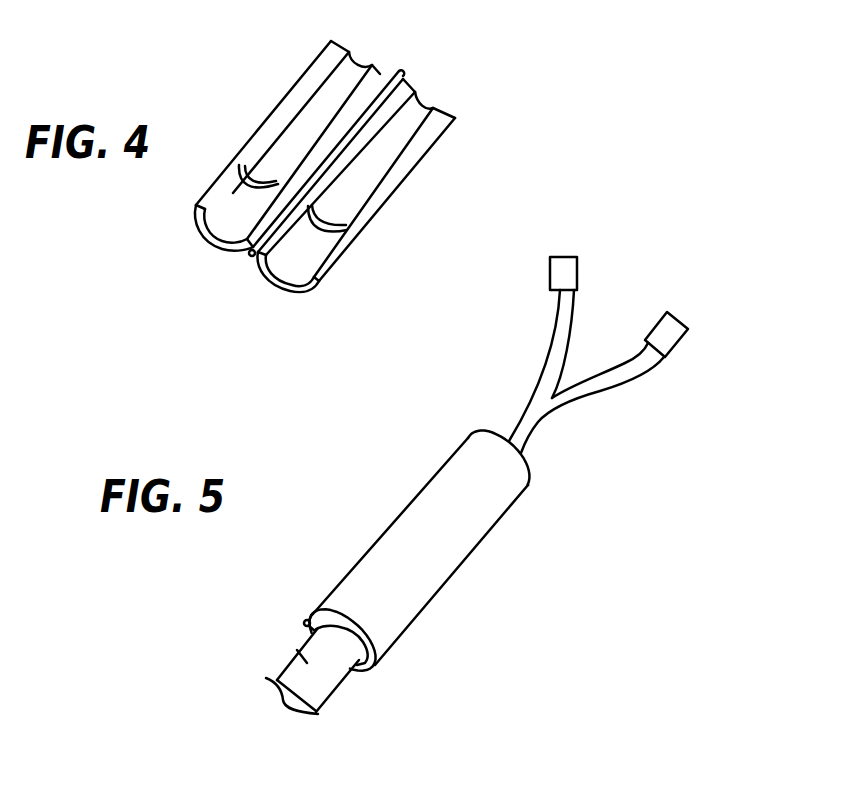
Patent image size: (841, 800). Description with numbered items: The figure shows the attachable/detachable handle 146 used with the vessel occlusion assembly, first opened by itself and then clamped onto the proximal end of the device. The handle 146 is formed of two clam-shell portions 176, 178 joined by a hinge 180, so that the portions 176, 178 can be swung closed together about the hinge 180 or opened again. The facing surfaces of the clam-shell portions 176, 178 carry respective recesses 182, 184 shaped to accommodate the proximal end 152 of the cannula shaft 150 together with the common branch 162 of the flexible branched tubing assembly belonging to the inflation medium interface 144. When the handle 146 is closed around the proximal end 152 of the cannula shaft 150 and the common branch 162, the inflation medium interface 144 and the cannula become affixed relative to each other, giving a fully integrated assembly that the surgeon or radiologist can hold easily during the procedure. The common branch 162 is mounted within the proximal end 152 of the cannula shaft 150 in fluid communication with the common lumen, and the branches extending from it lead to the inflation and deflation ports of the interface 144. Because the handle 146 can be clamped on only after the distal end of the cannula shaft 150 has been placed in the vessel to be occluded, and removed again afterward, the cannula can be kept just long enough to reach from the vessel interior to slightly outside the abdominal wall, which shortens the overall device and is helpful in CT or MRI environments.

In FIG. 5, the inflation medium interface 144 is at (446, 501).
In FIG. 4, the handle 146 is at (335, 146).
In FIG. 5, the handle 146 is at (393, 581).
In FIG. 5, the cannula shaft 150 is at (320, 684).
In FIG. 5, the proximal end 152 is at (306, 663).
In FIG. 5, the common branch 162 is at (535, 420).
In FIG. 4, the clam-shell portion 176 is at (287, 107).
In FIG. 5, the clam-shell portion 176 is at (415, 593).
In FIG. 4, the clam-shell portion 178 is at (400, 200).
In FIG. 5, the clam-shell portion 178 is at (364, 678).
In FIG. 4, the hinge 180 is at (380, 92).
In FIG. 5, the hinge 180 is at (304, 623).
In FIG. 4, the recess 182 is at (233, 196).
In FIG. 4, the second rib 184 is at (308, 252).